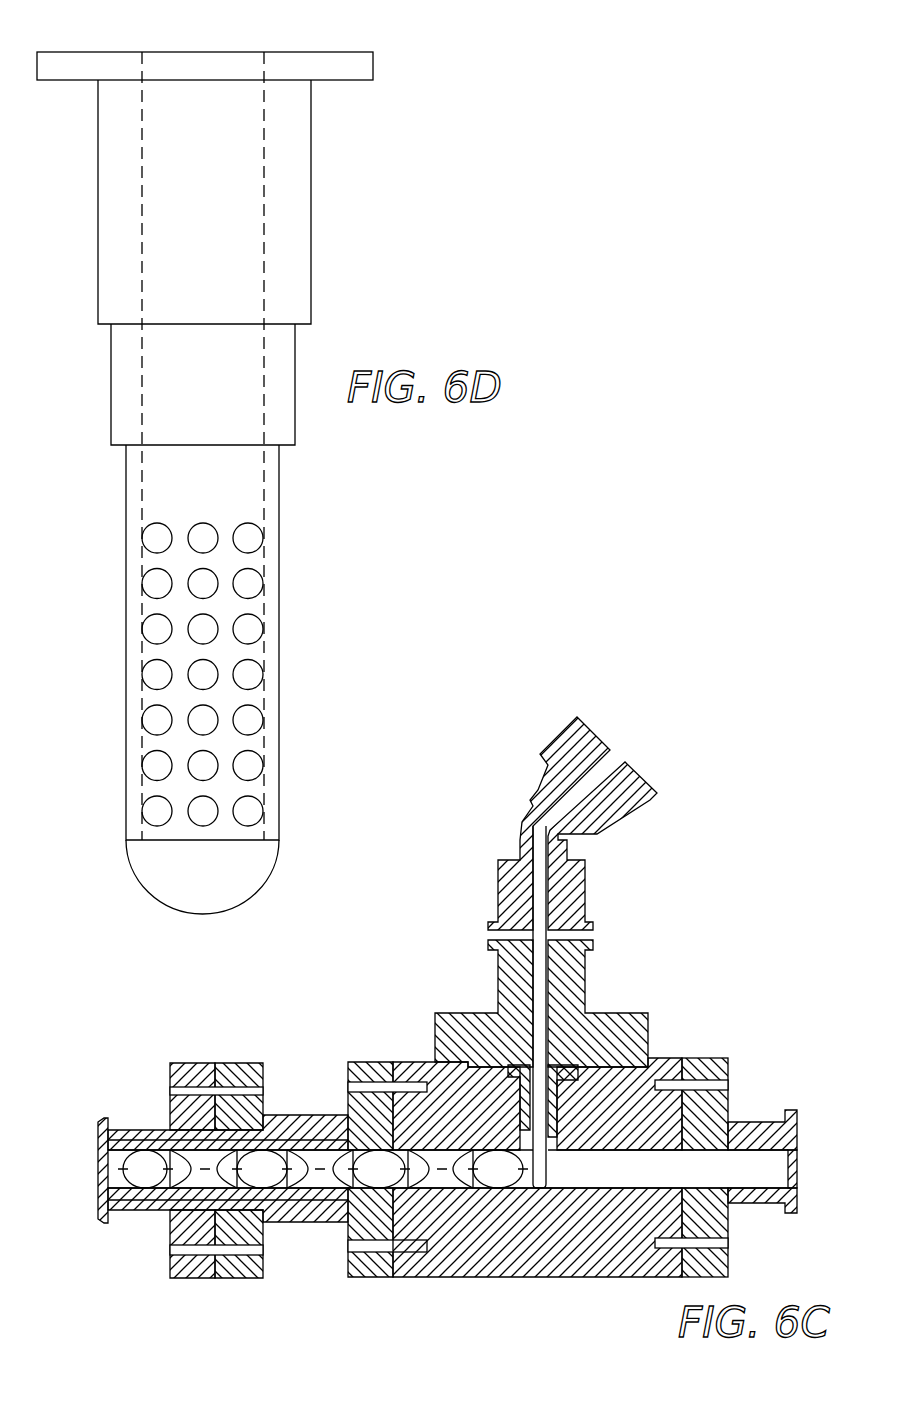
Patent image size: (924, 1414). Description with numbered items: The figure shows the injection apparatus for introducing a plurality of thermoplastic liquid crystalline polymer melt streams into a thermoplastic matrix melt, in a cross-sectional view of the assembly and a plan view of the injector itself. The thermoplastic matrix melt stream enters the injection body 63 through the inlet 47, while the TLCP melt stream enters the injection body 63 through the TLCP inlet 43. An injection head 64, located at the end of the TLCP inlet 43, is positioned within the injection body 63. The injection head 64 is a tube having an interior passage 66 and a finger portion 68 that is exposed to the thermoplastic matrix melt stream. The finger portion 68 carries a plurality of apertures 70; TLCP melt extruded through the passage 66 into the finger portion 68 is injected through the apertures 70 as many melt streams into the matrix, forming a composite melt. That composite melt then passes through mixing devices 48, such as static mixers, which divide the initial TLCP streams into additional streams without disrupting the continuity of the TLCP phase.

In FIG. 6C, the TLCP inlet 43 is at (542, 917).
In FIG. 6C, the inlet 47 is at (755, 1157).
In FIG. 6C, the mixing devices 48 is at (287, 1155).
In FIG. 6C, the injection body 63 is at (420, 1274).
In FIG. 6D, the injection head 64 is at (295, 544).
In FIG. 6C, the injection head 64 is at (548, 1153).
In FIG. 6D, the interior passage 66 is at (263, 114).
In FIG. 6D, the finger portion 68 is at (102, 447).
In FIG. 6D, the apertures 70 is at (252, 769).